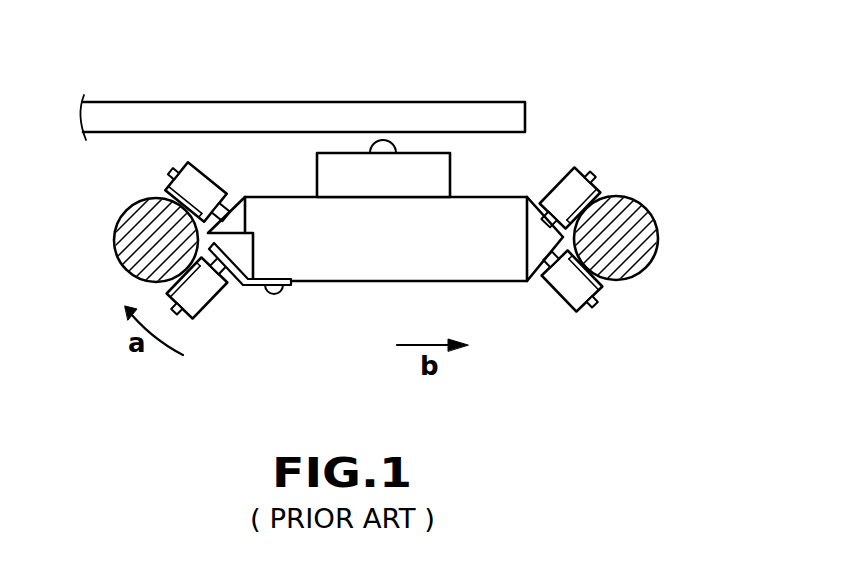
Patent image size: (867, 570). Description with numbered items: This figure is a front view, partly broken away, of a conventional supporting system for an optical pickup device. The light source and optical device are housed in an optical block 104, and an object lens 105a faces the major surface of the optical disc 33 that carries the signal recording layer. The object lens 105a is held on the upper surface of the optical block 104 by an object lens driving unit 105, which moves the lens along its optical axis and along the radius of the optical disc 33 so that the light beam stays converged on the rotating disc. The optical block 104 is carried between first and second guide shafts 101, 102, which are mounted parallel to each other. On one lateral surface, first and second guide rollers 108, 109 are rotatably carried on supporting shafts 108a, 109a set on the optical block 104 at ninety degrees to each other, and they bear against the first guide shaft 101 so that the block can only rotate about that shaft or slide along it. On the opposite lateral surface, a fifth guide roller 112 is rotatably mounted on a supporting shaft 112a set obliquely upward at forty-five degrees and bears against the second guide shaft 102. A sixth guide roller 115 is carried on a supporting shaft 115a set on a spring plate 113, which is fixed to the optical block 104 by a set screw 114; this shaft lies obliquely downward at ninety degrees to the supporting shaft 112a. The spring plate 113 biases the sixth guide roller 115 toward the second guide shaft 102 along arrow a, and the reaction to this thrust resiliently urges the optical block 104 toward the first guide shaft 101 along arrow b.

The optical disc 33 is at (496, 112).
The first guide shaft 101 is at (654, 250).
The second guide shaft 102 is at (115, 238).
The optical block 104 is at (493, 283).
The object lens driving unit 105 is at (452, 176).
The object lens 105a is at (386, 148).
The first guide roller 108 is at (603, 287).
The supporting shaft 108a is at (602, 306).
The second guide roller 109 is at (600, 190).
The supporting shaft 109a is at (594, 175).
The fifth guide roller 112 is at (186, 165).
The supporting shaft 112a is at (170, 175).
The spring plate 113 is at (297, 286).
The set screw 114 is at (275, 297).
The sixth guide roller 115 is at (208, 303).
The supporting shaft 115a is at (177, 317).